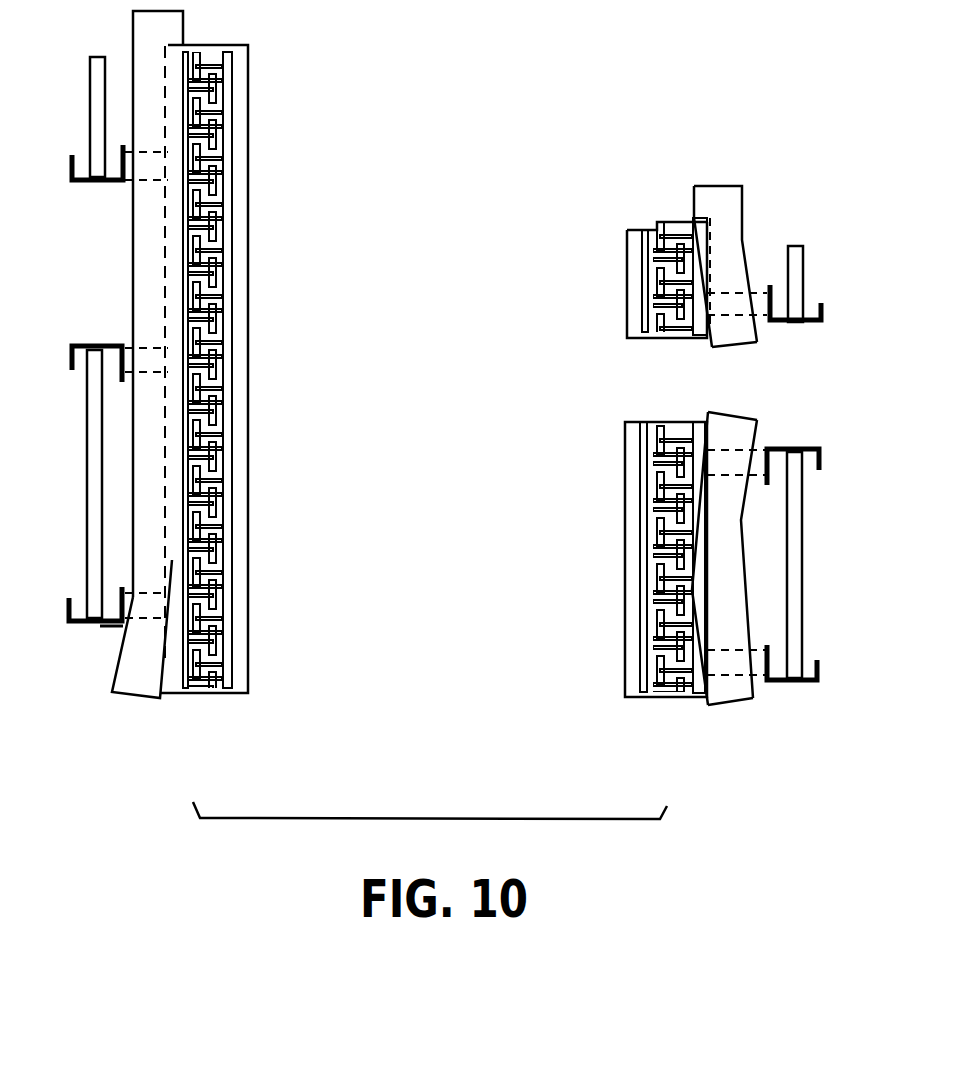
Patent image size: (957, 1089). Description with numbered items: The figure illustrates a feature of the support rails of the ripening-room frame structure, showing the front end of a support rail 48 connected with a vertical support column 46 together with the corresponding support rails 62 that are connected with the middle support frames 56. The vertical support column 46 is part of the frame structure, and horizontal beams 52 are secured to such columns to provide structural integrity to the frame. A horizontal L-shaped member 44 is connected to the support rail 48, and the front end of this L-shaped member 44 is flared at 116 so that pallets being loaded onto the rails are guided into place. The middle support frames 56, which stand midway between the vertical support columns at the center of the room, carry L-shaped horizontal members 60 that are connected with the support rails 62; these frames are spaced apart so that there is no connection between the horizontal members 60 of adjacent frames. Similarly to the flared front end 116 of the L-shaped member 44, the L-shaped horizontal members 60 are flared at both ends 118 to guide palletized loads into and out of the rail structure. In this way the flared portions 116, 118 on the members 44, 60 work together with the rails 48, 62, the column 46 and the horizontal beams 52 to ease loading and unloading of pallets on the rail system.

The horizontal L-shaped member 44 is at (148, 234).
The vertical support column 46 is at (70, 620).
The support rail 48 is at (256, 497).
The horizontal beam 52 is at (90, 456).
The middle support frame 56 is at (797, 262).
The horizontal member 60 is at (723, 198).
The support rail 62 is at (632, 278).
The flared front end 116 is at (160, 698).
The flared ends 118 is at (692, 712).